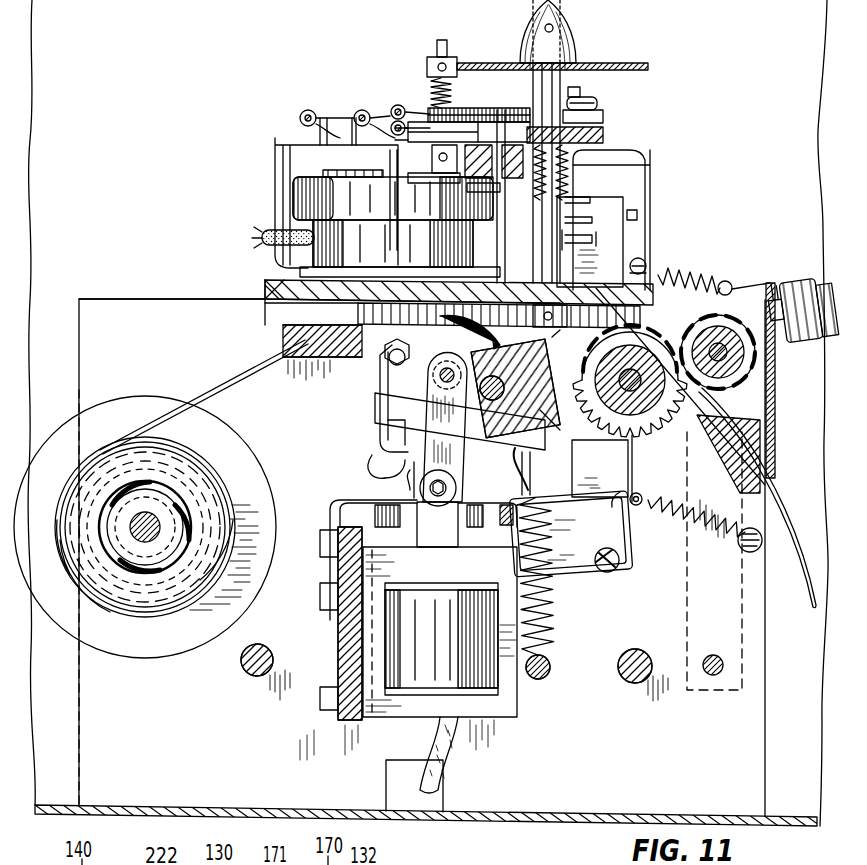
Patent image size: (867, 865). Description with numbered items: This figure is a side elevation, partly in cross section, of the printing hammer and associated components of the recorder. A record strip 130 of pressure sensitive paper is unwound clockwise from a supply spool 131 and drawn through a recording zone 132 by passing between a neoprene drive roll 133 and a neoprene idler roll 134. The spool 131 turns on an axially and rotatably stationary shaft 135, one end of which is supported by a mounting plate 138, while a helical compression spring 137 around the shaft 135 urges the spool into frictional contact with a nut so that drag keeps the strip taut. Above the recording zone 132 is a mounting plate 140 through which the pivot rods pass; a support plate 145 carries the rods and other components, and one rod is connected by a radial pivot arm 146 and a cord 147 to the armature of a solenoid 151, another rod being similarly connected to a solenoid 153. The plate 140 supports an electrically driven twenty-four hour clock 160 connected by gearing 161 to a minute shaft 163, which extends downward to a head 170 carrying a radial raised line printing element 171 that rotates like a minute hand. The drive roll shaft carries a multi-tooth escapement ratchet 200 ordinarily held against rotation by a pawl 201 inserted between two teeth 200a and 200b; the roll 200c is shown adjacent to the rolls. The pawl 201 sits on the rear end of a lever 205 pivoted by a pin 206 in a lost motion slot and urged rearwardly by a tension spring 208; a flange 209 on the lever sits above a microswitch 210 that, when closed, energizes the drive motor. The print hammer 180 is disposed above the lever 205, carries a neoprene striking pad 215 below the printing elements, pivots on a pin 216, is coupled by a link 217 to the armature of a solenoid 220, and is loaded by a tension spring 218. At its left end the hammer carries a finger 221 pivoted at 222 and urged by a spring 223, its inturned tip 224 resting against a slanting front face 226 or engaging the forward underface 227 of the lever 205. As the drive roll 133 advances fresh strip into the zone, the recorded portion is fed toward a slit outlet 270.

The record strip 130 is at (223, 378).
The supply spool 131 is at (264, 488).
The recording zone 132 is at (568, 342).
The drive roll 133 is at (655, 336).
The idler roll 134 is at (742, 376).
The shaft 135 is at (140, 525).
The helical compression spring 137 is at (172, 463).
The mounting plate 138 is at (156, 300).
The mounting plate 140 is at (268, 303).
The support plate 145 is at (603, 121).
The radial pivot arm 146 is at (596, 240).
The cord 147 is at (592, 228).
The solenoid 151 is at (605, 150).
The solenoid 153 is at (290, 166).
The electrically driven 24 hour clock 160 is at (300, 191).
The gearing 161 is at (462, 112).
The minute shaft 163 is at (553, 200).
The head 170 is at (533, 315).
The line printing element 171 is at (563, 312).
The print hammer 180 is at (456, 327).
The escapement ratchet 200 is at (597, 444).
The ratchet tooth 200a is at (600, 468).
The ratchet tooth 200b is at (655, 424).
The roller 200c is at (690, 400).
The pawl 201 is at (634, 456).
The lever 205 is at (492, 462).
The pin 206 is at (515, 421).
The tension spring 208 is at (705, 561).
The flange 209 is at (643, 496).
The microswitch 210 is at (600, 543).
The striking pad 215 is at (560, 336).
The pin 216 is at (442, 450).
The link 217 is at (412, 467).
The tension spring 218 is at (550, 631).
The solenoid 220 is at (498, 715).
The finger 221 is at (382, 398).
The pivot 222 is at (392, 348).
The spring 223 is at (382, 372).
The tip 224 is at (372, 455).
The slanting front face 226 is at (388, 426).
The forward underface 227 is at (388, 477).
The slit outlet 270 is at (770, 477).